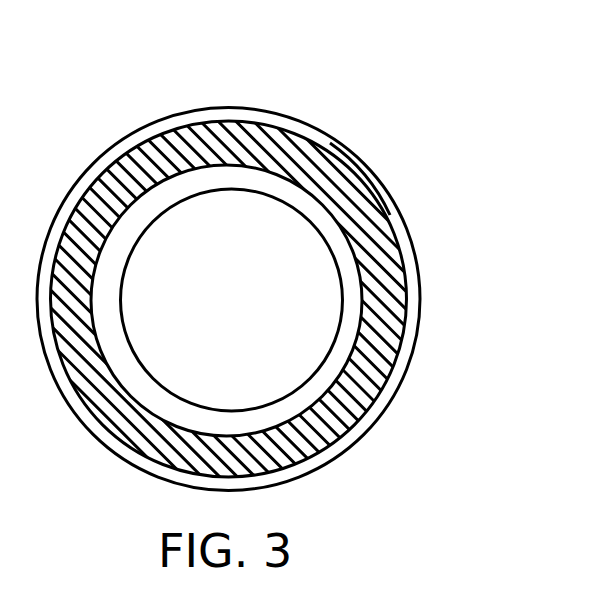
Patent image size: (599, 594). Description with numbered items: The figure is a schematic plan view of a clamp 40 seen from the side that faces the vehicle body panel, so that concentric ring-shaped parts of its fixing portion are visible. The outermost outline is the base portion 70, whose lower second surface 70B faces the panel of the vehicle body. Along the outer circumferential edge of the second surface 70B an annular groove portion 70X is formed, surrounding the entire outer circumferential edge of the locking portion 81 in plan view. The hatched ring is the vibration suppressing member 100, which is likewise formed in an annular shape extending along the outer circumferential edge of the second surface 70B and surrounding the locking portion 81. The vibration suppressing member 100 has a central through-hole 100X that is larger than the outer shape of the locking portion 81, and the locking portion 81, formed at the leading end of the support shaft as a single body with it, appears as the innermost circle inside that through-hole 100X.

The clamp 40 is at (441, 82).
The base portion 70 is at (292, 117).
The second surface 70B is at (330, 143).
The groove portion 70X is at (366, 199).
The vibration suppressing member 100 is at (137, 158).
The through-hole 100X is at (88, 303).
The locking portion 81 is at (341, 297).